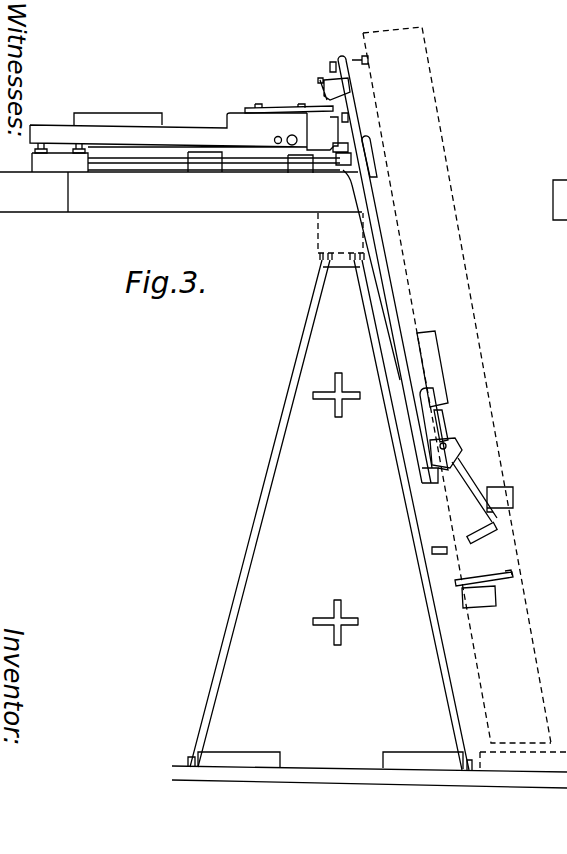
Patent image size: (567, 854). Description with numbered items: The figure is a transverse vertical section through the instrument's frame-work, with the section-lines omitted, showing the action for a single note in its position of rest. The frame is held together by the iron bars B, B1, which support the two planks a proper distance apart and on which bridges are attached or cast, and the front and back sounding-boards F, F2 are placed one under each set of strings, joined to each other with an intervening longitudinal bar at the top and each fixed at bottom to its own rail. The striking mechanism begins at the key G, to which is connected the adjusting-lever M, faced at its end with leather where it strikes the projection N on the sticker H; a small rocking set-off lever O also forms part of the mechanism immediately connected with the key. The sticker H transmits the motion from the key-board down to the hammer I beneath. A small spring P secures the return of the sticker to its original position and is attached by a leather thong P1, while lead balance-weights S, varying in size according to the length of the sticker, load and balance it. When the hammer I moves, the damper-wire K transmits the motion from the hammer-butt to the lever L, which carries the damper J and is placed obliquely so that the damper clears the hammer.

The key G is at (168, 121).
The adjusting-lever M is at (284, 111).
The lead balance-weights S is at (286, 131).
The set-off lever O is at (334, 130).
The projection N is at (343, 79).
The sticker H is at (386, 290).
The spring P is at (375, 156).
The leather thong P1 is at (350, 177).
The front sounding-board F is at (260, 513).
The back sounding-board F2 is at (411, 515).
The bar B is at (336, 397).
The bar B1 is at (341, 625).
The hammer I is at (463, 477).
The damper J is at (437, 541).
The damper-wire K is at (500, 521).
The lever L is at (484, 581).